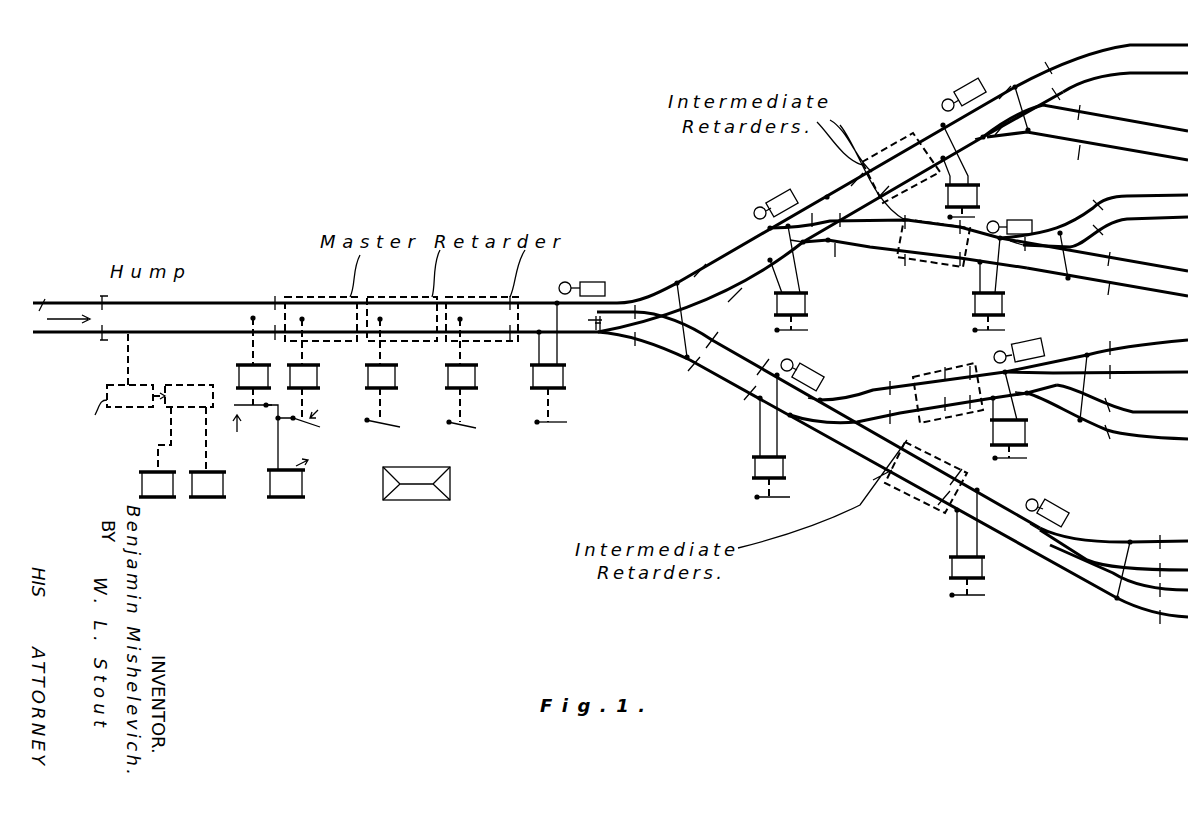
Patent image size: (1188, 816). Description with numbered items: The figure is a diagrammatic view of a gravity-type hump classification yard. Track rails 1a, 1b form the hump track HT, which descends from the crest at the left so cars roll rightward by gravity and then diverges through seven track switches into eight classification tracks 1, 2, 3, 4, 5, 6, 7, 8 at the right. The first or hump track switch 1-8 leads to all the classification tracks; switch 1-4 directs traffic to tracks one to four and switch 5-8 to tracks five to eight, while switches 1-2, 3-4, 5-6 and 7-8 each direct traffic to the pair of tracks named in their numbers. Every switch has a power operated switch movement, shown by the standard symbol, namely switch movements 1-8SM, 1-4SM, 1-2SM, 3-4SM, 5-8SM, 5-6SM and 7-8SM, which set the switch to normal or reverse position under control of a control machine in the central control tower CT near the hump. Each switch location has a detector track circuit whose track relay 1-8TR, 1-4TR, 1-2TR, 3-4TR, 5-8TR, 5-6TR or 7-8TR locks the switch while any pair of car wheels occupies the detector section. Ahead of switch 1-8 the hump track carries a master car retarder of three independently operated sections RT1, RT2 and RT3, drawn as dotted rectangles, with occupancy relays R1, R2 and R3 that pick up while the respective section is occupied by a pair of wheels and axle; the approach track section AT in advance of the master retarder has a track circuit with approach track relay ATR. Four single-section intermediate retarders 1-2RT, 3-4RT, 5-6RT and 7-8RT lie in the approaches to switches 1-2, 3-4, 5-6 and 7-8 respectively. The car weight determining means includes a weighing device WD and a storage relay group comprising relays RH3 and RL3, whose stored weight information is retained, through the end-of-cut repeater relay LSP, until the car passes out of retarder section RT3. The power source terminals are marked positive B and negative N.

The hump track HT is at (64, 301).
The track rail 1a is at (226, 300).
The track rail 1b is at (199, 338).
The approach track section AT is at (305, 318).
The weighing device WD is at (107, 387).
The approach track relay ATR is at (239, 361).
The master retarder section RT1 is at (338, 294).
The master retarder section RT2 is at (418, 294).
The master retarder section RT3 is at (498, 294).
The occupancy relay R1 is at (308, 355).
The occupancy relay R2 is at (388, 373).
The occupancy relay R3 is at (469, 373).
The weight information storage relay RH3 is at (168, 452).
The weight information storage relay RL3 is at (218, 452).
The positive terminal B is at (238, 434).
The end-of-cut repeater relay LSP is at (290, 451).
The negative terminal N is at (309, 468).
The control tower CT is at (415, 500).
The switch movement 1-8SM is at (589, 277).
The hump track switch 1-8 is at (597, 334).
The track relay 1-8TR is at (576, 362).
The switch movement 1-4SM is at (781, 196).
The track switch 1-4 is at (802, 245).
The track relay 1-4TR is at (806, 305).
The intermediate retarder 1-2RT is at (866, 162).
The switch movement 1-2SM is at (965, 85).
The track switch 1-2 is at (975, 141).
The track relay 1-2TR is at (978, 192).
The switch movement 3-4SM is at (1024, 221).
The intermediate retarder 3-4RT is at (913, 254).
The track relay 3-4TR is at (975, 305).
The track switch 3-4 is at (1017, 255).
The switch movement 5-8SM is at (822, 358).
The track switch 5-8 is at (822, 402).
The track relay 5-8TR is at (755, 468).
The intermediate retarder 5-6RT is at (968, 366).
The switch movement 5-6SM is at (1045, 336).
The track relay 5-6TR is at (994, 437).
The track switch 5-6 is at (1027, 396).
The intermediate retarder 7-8RT is at (945, 513).
The switch movement 7-8SM is at (1056, 496).
The track relay 7-8TR is at (952, 572).
The track switch 7-8 is at (1040, 533).
The classification track 1 is at (1101, 72).
The classification track 2 is at (1085, 132).
The classification track 3 is at (1094, 221).
The classification track 4 is at (1094, 267).
The classification track 5 is at (1096, 359).
The classification track 6 is at (1107, 412).
The classification track 7 is at (1114, 552).
The classification track 8 is at (1119, 584).